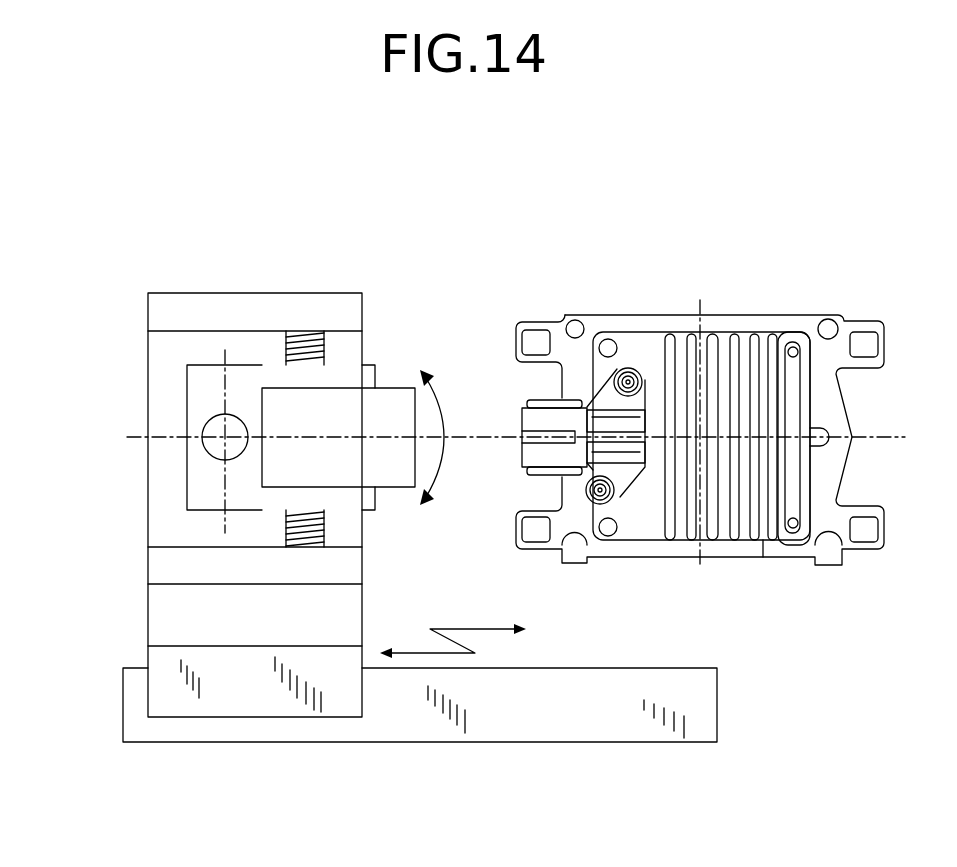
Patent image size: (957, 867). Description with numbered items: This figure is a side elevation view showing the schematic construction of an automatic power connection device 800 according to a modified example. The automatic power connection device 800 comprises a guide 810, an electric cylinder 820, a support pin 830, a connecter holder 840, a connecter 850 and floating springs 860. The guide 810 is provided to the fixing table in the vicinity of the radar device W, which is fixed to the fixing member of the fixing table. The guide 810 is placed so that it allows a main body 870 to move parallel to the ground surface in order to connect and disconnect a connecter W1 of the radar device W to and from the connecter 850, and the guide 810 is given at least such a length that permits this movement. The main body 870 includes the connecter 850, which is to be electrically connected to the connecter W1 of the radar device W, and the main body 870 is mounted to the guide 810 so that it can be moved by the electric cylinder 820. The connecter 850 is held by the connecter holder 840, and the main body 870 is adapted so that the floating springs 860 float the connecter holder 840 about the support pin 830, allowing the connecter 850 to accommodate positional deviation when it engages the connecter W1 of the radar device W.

The automatic power connection device 800 is at (156, 251).
The guide 810 is at (553, 730).
The electric cylinder 820 is at (165, 662).
The support pin 830 is at (212, 447).
The connecter holder 840 is at (200, 375).
The connecter 850 is at (387, 400).
The floating springs 860 is at (288, 352).
The main body 870 is at (125, 412).
The radar device W is at (737, 315).
The connecter of the radar device W1 is at (528, 410).